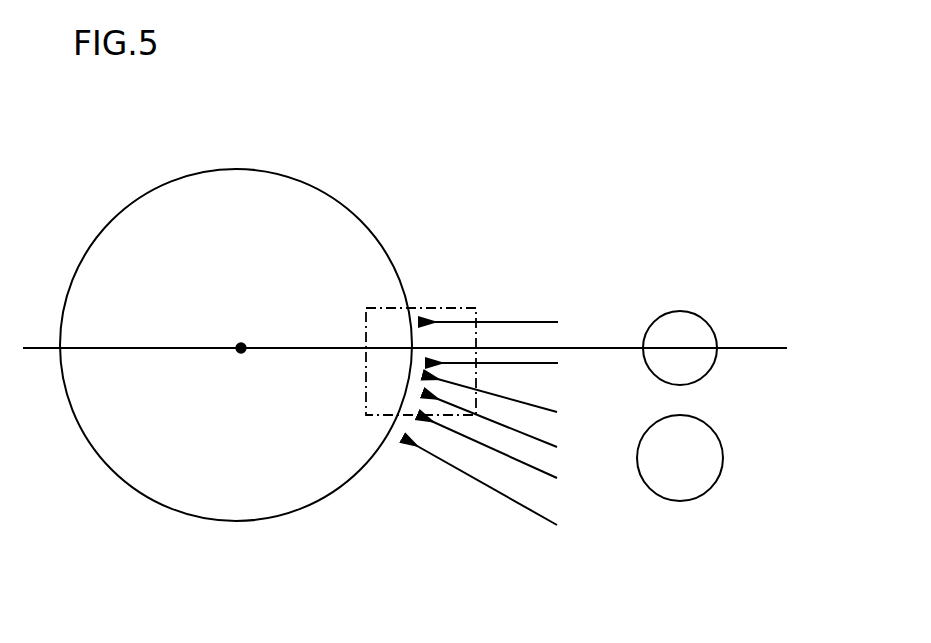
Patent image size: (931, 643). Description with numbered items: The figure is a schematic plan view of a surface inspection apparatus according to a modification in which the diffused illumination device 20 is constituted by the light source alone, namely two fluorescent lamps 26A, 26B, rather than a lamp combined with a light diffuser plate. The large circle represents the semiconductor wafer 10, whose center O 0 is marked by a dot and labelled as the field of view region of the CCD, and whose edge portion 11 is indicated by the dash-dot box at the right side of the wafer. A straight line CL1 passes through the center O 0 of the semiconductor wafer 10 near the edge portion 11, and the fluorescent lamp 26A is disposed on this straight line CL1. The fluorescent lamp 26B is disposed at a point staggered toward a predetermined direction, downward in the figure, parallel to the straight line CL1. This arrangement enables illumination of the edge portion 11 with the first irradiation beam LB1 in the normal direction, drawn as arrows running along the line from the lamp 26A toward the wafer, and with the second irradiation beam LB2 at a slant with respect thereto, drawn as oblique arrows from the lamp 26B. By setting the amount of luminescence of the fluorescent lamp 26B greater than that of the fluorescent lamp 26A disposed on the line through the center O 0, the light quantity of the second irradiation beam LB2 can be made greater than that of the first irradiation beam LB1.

The center of the semiconductor wafer 0 is at (238, 346).
The semiconductor wafer 10 is at (103, 242).
The edge portion 11 is at (435, 307).
The diffused illumination device 20 is at (674, 357).
The fluorescent lamp 26A is at (678, 323).
The fluorescent lamp 26B is at (697, 478).
The first irradiation beam LB1 is at (537, 362).
The second irradiation beam LB2 is at (507, 400).
The straight line CL1 is at (408, 334).